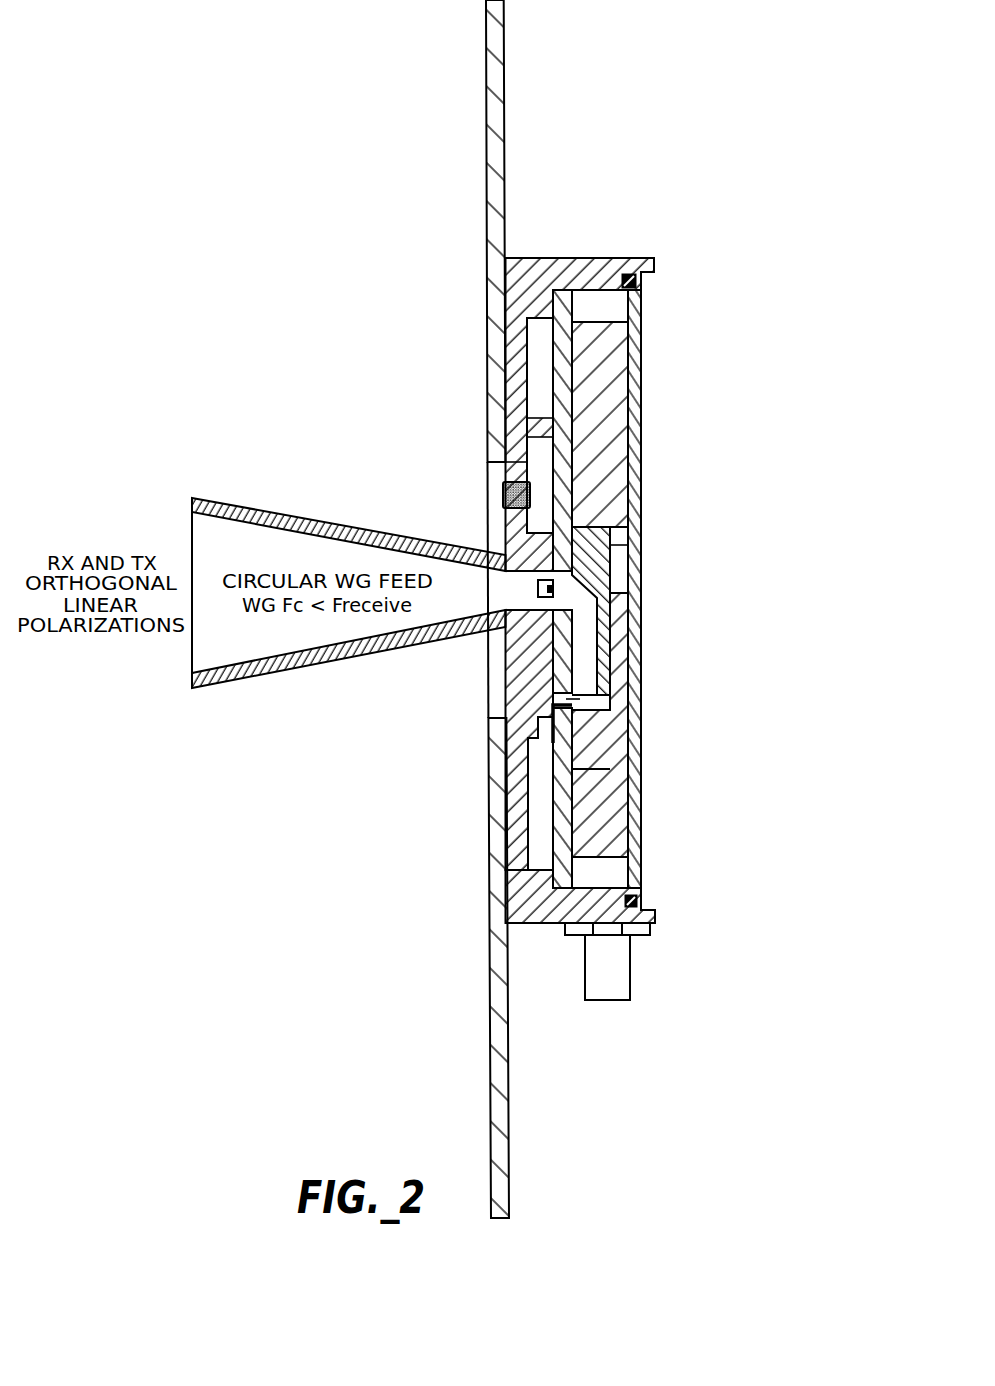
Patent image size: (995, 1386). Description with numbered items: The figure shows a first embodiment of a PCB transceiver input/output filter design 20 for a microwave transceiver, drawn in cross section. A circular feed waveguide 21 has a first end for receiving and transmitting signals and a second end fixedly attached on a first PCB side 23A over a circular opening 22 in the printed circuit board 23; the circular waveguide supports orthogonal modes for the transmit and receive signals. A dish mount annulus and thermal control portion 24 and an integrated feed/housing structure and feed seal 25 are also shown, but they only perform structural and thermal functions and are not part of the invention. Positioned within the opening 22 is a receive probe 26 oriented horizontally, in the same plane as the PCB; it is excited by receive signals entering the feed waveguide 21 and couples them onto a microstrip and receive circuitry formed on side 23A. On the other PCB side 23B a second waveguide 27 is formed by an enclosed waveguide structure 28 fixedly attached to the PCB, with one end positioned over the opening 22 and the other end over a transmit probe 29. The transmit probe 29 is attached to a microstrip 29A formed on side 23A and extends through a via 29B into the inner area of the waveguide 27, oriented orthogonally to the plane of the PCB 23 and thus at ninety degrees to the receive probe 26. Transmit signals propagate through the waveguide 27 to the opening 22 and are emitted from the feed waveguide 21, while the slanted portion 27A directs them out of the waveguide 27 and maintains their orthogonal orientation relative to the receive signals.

The I/O filter design 20 is at (578, 113).
The feed waveguide 21 is at (297, 518).
The opening 22 is at (510, 566).
The printed circuit board 23 is at (683, 883).
The first PCB side 23A is at (527, 353).
The second PCB side 23B is at (571, 367).
The dish mount annulus and thermal control portion 24 is at (512, 1177).
The integrated feed/housing structure and feed seal 25 is at (611, 338).
The receive probe 26 is at (538, 590).
The second waveguide 27 is at (585, 648).
The slanted portion 27A is at (612, 582).
The enclosed waveguide structure 28 is at (590, 772).
The transmit probe 29 is at (557, 723).
The microstrip 29A is at (550, 739).
The via 29B is at (580, 699).